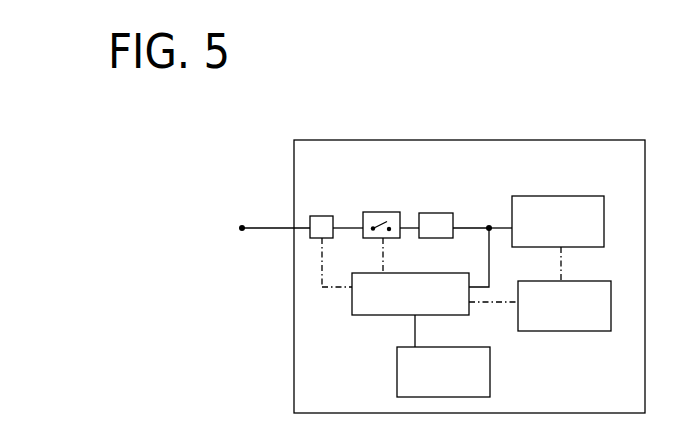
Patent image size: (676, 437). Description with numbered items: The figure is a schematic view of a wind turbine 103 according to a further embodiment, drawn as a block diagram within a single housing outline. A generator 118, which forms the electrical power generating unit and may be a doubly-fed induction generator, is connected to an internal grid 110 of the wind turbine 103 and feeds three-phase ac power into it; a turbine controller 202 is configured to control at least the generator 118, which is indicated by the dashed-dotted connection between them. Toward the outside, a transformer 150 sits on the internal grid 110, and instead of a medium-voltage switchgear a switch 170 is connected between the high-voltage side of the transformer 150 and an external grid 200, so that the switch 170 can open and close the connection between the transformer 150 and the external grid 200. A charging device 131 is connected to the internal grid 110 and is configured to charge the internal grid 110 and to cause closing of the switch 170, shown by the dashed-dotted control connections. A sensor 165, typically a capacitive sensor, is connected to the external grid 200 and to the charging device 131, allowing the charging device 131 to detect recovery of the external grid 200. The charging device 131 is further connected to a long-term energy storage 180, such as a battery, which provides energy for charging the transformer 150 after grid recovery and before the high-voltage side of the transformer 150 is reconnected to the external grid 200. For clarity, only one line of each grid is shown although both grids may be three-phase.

The wind turbine 103 is at (605, 107).
The external grid 200 is at (253, 227).
The sensor 165 is at (322, 216).
The switch 170 is at (370, 220).
The transformer 150 is at (425, 228).
The internal grid 110 is at (484, 226).
The generator 118 is at (575, 233).
The charging device 131 is at (427, 304).
The turbine controller 202 is at (582, 317).
The long-term energy storage 180 is at (463, 385).